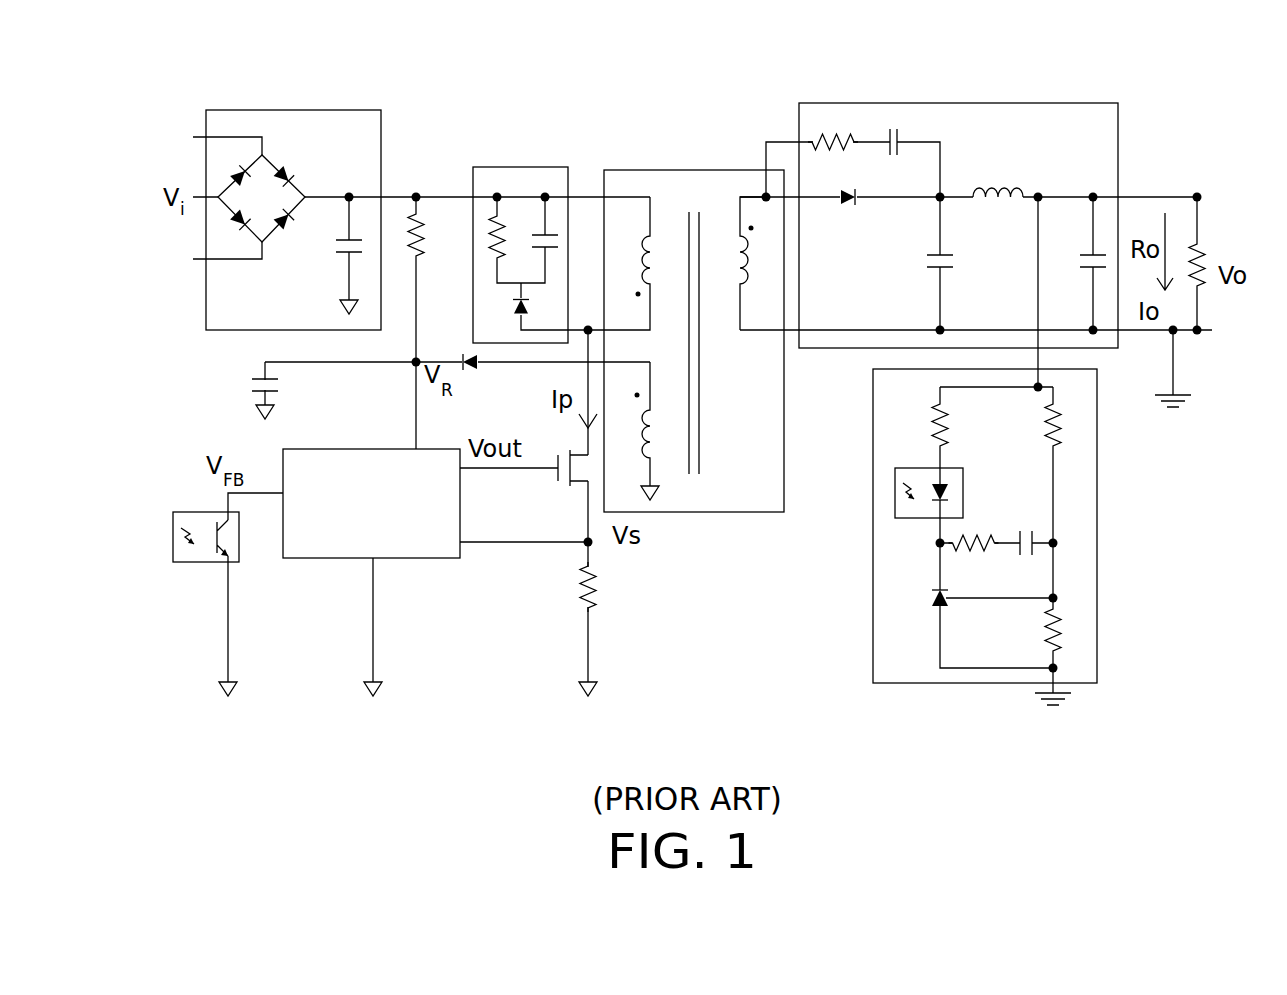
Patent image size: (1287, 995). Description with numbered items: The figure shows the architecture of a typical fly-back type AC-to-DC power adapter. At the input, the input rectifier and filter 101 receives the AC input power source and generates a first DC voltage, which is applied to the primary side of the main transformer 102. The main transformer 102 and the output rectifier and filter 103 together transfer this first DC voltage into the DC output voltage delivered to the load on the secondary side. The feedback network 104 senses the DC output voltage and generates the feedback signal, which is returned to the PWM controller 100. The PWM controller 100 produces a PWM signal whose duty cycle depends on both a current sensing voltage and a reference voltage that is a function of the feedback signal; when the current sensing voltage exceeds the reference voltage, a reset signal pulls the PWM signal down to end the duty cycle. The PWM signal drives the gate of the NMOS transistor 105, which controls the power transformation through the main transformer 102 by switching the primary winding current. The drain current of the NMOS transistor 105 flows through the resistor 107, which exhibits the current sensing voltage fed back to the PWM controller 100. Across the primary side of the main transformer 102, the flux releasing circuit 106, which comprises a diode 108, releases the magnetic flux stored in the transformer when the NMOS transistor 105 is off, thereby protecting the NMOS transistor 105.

The PWM controller 100 is at (312, 560).
The input rectifier and filter 101 is at (297, 110).
The main transformer 102 is at (680, 170).
The output rectifier and filter 103 is at (958, 103).
The feedback network 104 is at (1097, 515).
The NMOS transistor 105 is at (582, 478).
The flux releasing circuit 106 is at (527, 167).
The resistor 107 is at (605, 592).
The diode 108 is at (512, 308).